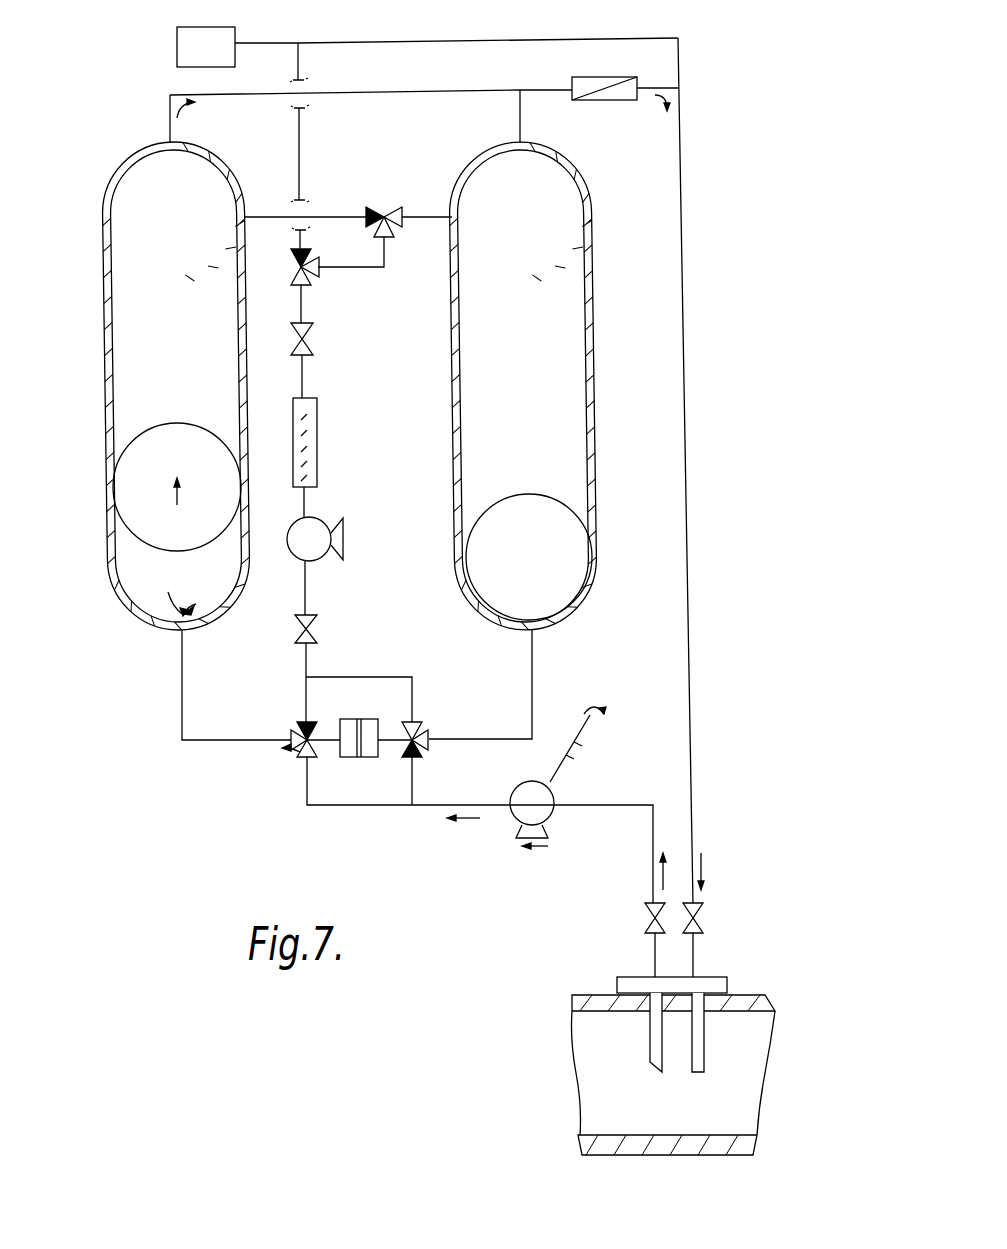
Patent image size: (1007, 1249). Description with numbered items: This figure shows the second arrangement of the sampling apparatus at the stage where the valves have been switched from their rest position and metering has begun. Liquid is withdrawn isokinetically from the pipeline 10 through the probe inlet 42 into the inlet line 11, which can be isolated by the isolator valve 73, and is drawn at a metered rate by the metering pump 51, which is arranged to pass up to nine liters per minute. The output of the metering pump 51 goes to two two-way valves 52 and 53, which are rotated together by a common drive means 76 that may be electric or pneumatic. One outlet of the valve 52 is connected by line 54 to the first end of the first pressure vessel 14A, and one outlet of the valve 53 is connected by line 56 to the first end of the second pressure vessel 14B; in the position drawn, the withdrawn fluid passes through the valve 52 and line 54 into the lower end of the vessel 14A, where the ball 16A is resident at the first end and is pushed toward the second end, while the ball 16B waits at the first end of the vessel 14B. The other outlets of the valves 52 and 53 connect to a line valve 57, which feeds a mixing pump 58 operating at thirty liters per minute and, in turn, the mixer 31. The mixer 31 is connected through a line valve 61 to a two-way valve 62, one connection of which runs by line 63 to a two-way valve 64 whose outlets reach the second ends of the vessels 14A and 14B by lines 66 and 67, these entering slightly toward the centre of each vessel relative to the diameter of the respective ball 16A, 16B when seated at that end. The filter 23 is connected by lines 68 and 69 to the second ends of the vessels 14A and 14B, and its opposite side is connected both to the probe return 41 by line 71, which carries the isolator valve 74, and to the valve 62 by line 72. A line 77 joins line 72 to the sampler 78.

The pipeline 10 is at (578, 1076).
The inlet line 11 is at (655, 958).
The first pressure vessel 14A is at (103, 225).
The second pressure vessel 14B is at (453, 404).
The ball 16A is at (138, 457).
The ball 16B is at (557, 517).
The filter 23 is at (600, 66).
The mixer 31 is at (320, 440).
The probe return 41 is at (700, 1078).
The probe inlet 42 is at (657, 1076).
The metering pump 51 is at (551, 790).
The two-way valve 52 is at (300, 752).
The two-way valve 53 is at (415, 724).
The line 54 is at (182, 693).
The line 56 is at (532, 694).
The line valve 57 is at (315, 633).
The mixing pump 58 is at (345, 547).
The line valve 61 is at (314, 344).
The two-way valve 62 is at (292, 268).
The line 63 is at (386, 268).
The two-way valve 64 is at (382, 208).
The line 66 is at (261, 214).
The line 67 is at (420, 214).
The line 68 is at (225, 95).
The line 69 is at (522, 128).
The line 71 is at (688, 422).
The line 72 is at (444, 40).
The isolator valve 73 is at (645, 918).
The isolator valve 74 is at (703, 918).
The common drive means 76 is at (366, 757).
The line 77 is at (262, 42).
The sampler 78 is at (206, 47).